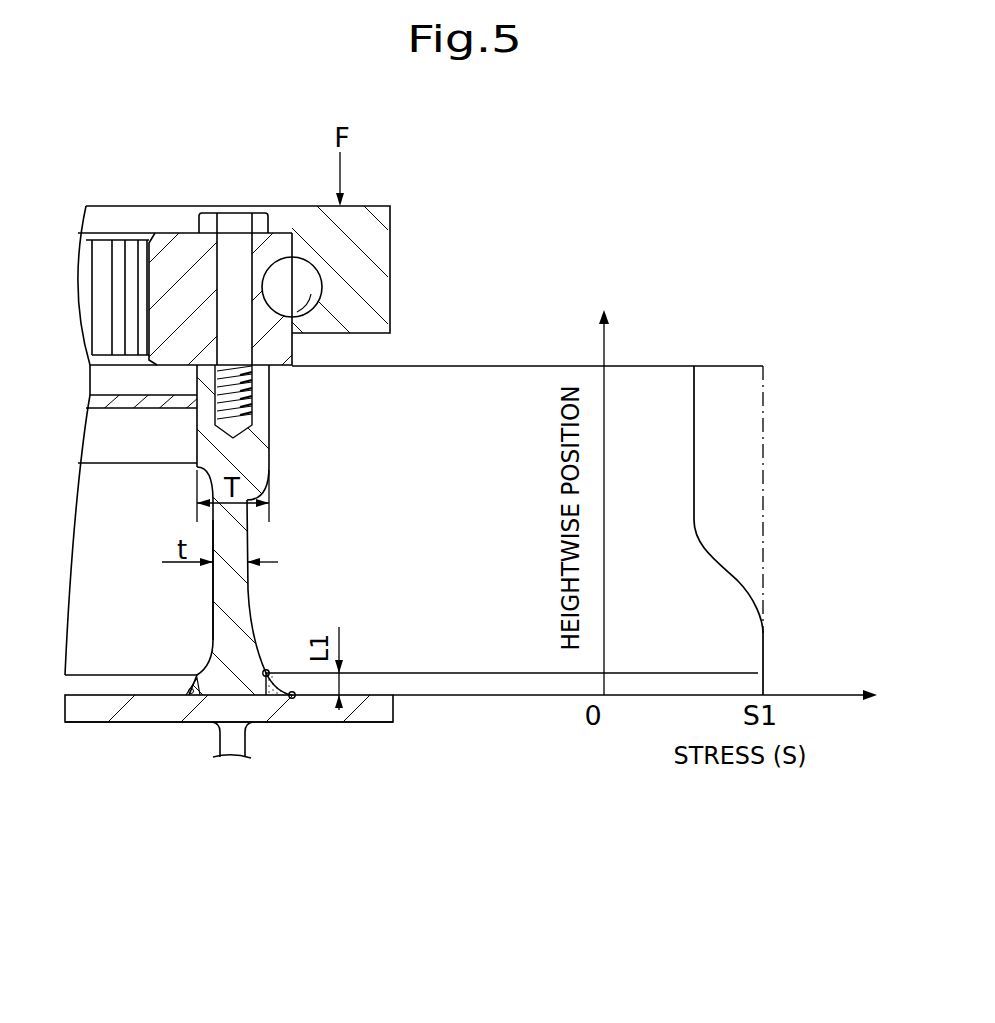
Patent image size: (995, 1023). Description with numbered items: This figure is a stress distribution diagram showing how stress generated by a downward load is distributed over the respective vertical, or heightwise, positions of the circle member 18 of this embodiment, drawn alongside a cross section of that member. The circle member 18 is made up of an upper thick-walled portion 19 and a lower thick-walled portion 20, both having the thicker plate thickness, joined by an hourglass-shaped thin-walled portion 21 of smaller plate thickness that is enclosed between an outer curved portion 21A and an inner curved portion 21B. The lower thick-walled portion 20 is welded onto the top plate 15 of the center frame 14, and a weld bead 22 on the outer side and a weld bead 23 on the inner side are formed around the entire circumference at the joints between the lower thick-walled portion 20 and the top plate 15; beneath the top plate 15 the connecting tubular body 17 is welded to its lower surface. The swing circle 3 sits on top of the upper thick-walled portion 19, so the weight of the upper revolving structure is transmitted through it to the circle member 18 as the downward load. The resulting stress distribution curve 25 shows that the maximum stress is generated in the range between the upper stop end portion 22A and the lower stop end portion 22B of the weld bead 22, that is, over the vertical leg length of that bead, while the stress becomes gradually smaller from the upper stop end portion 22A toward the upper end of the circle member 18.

The swing circle 3 is at (182, 268).
The center frame 14 is at (151, 730).
The top plate 15 is at (102, 710).
The connecting tubular body 17 is at (232, 750).
The circle member 18 is at (237, 593).
The upper thick-walled portion 19 is at (257, 446).
The lower thick-walled portion 20 is at (207, 662).
The thin-walled portion 21 is at (223, 528).
The outer curved portion 21A is at (253, 535).
The inner curved portion 21B is at (213, 600).
The weld bead 22 is at (273, 698).
The upper stop end portion 22A is at (271, 670).
The lower stop end portion 22B is at (294, 698).
The weld bead 23 is at (188, 697).
The stress distribution curve 25 is at (737, 580).